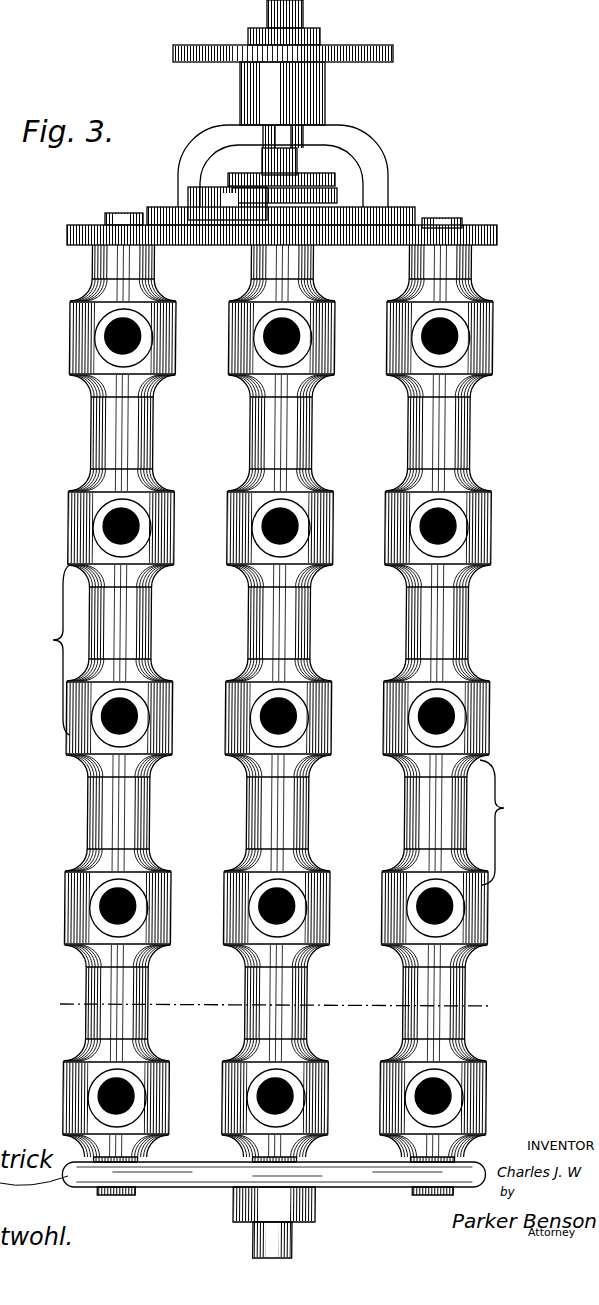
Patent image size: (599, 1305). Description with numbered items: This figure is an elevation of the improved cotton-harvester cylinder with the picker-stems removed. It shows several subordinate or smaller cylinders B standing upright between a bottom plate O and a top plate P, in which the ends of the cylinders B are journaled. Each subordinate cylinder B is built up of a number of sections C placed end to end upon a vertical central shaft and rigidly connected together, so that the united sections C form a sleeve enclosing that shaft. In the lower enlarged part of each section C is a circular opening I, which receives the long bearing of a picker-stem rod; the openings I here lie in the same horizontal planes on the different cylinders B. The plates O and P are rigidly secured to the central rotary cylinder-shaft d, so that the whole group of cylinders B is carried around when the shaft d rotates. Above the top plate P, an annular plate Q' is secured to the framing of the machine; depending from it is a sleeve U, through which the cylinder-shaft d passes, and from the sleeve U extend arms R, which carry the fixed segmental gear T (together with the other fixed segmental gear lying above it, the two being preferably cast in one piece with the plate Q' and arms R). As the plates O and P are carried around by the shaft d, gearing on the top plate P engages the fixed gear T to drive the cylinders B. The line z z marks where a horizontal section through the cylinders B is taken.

The central shaft d is at (284, 22).
The annular plate Q' is at (287, 42).
The sleeve U is at (293, 118).
The arms R is at (292, 163).
The fixed segmental gear T is at (414, 211).
The top plate P is at (288, 228).
The subordinate cylinder B is at (288, 623).
The circular opening I is at (278, 718).
The section C is at (278, 725).
The section line z z is at (274, 1005).
The bottom plate O is at (276, 1201).